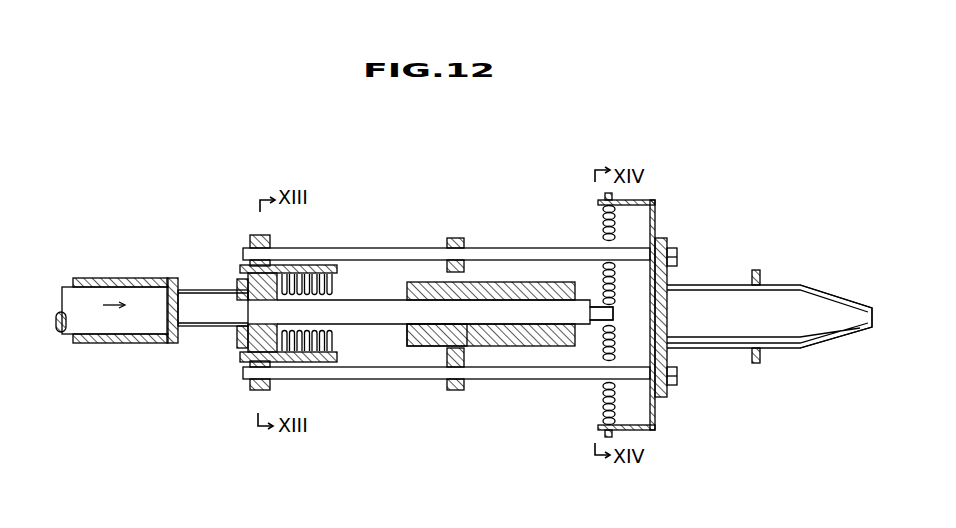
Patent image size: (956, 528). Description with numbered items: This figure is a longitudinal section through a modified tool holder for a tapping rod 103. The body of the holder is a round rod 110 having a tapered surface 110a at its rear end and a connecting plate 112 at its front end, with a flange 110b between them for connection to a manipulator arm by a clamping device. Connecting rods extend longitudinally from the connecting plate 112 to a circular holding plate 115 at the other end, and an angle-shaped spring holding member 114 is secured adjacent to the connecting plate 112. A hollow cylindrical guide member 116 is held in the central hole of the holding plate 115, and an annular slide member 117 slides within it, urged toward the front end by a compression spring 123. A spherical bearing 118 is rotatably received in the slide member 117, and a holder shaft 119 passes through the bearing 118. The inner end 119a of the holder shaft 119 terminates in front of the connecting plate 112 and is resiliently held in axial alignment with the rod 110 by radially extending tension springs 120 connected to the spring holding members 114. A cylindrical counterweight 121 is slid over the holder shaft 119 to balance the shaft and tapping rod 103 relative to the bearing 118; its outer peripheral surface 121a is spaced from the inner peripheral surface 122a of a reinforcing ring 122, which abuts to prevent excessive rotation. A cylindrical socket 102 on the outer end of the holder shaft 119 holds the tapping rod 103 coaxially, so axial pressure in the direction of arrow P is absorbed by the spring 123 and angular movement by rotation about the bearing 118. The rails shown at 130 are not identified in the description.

The cylindrical socket 102 is at (117, 278).
The tapping rod 103 is at (76, 322).
The round rod 110 is at (710, 285).
The tapered surface 110a is at (832, 300).
The flange 110b is at (756, 270).
The connecting plate 112 is at (669, 352).
The spring holding member 114 is at (642, 200).
The holding plate 115 is at (252, 236).
The guide member 116 is at (246, 354).
The slide member 117 is at (250, 283).
The spherical bearing 118 is at (245, 330).
The holder shaft 119 is at (380, 322).
The inner end of holder shaft 119a is at (616, 313).
The tension springs 120 is at (603, 226).
The counterweight 121 is at (520, 342).
The outer peripheral surface of counterweight 121a is at (462, 350).
The reinforcing ring 122 is at (453, 238).
The inner peripheral surface of ring 122a is at (453, 352).
The compression spring 123 is at (338, 338).
The guide rod 130 is at (410, 252).